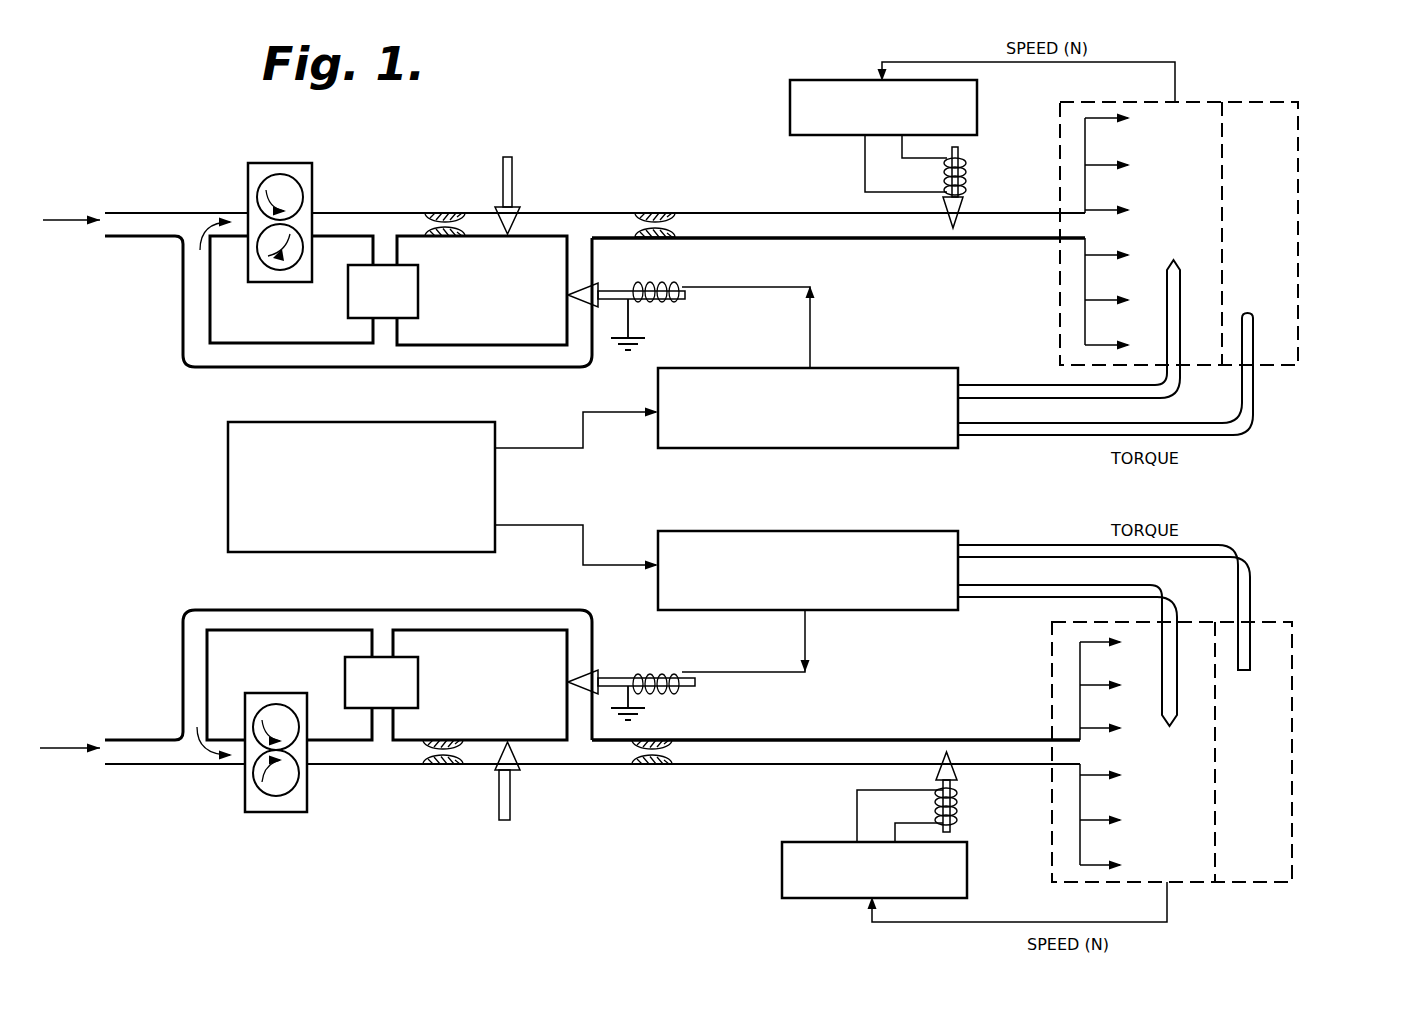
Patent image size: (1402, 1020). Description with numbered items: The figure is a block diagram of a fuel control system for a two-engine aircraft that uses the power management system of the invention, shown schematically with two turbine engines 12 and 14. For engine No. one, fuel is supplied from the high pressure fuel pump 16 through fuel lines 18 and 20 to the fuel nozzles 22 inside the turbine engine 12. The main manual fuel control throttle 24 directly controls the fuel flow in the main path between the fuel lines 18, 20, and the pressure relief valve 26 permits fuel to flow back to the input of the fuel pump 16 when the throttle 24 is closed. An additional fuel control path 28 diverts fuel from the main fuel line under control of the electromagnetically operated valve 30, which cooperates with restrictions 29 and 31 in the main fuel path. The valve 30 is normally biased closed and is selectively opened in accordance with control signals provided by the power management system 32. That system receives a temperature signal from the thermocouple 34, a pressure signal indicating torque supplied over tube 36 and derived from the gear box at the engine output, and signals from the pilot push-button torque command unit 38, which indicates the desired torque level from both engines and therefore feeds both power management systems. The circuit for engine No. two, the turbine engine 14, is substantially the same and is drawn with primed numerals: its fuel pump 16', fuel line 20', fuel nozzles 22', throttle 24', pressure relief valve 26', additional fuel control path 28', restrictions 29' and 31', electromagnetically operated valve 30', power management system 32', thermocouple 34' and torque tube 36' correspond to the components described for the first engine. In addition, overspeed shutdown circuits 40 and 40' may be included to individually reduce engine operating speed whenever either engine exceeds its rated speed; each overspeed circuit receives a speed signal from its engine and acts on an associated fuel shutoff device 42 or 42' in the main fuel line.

The turbine engine 12 is at (1205, 100).
The turbine engine 14 is at (1197, 882).
The fuel pump 16 is at (262, 202).
The fuel pump 16' is at (255, 773).
The fuel line 18 is at (352, 213).
The fuel line 20 is at (838, 268).
The fuel line 20' is at (836, 715).
The fuel nozzles 22 is at (1064, 232).
The fuel nozzles 22' is at (1050, 754).
The main manual fuel control throttle 24 is at (494, 173).
The main manual fuel control throttle 24' is at (532, 801).
The pressure relief valve 26 is at (348, 297).
The pressure relief valve 26' is at (402, 644).
The additional fuel control path 28 is at (348, 318).
The additional fuel control path 28' is at (348, 655).
The restriction 29 is at (465, 249).
The restriction 29' is at (421, 774).
The electromagnetically operated valve 30 is at (691, 325).
The electromagnetically operated valve 30' is at (689, 665).
The restriction 31 is at (681, 208).
The restriction 31' is at (686, 774).
The power management system 32 is at (808, 430).
The power management system 32' is at (841, 554).
The thermocouple 34 is at (1110, 317).
The thermocouple 34' is at (1114, 672).
The tube 36 is at (1142, 361).
The tube 36' is at (1146, 623).
The pilot push-button torque command unit 38 is at (228, 470).
The overspeed shutdown circuit 40 is at (856, 91).
The overspeed shutdown circuit 40' is at (827, 870).
The shut-off valve solenoid 42 is at (943, 181).
The shut-off valve solenoid (engine 2) 42' is at (935, 797).